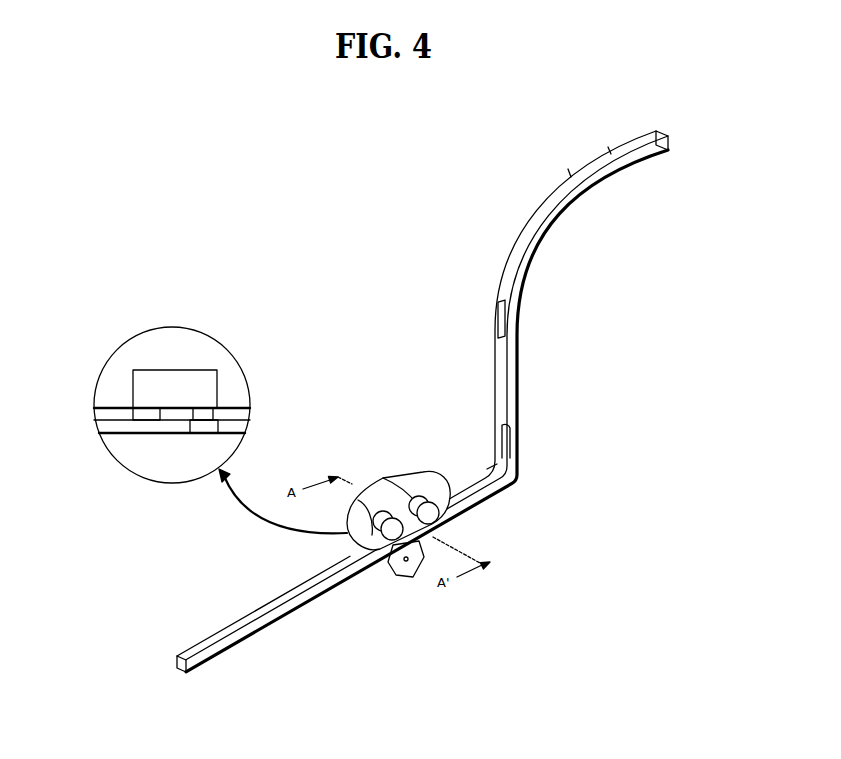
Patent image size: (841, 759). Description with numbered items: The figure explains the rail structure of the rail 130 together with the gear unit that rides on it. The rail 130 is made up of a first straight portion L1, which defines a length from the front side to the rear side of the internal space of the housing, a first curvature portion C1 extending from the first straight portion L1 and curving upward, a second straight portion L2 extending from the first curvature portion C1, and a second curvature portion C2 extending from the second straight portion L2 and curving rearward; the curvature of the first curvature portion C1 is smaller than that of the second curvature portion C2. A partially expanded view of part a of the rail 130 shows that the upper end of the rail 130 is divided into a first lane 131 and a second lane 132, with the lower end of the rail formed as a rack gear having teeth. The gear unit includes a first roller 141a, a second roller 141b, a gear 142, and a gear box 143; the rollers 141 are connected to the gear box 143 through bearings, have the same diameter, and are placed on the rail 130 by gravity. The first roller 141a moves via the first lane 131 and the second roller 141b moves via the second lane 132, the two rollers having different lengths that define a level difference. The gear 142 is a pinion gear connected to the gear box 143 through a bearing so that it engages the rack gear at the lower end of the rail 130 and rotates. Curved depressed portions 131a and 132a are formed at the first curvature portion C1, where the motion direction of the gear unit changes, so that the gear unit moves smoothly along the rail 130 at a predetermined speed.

The rail 130 is at (422, 401).
The first lane 131 is at (243, 426).
The second lane 132 is at (245, 414).
The curved depressed portion 131a is at (512, 443).
The curved depressed portion 132a is at (490, 468).
The rollers 141 is at (288, 483).
The first roller 141a is at (442, 492).
The second roller 141b is at (400, 495).
The gear 142 is at (403, 579).
The gear box 143 is at (373, 483).
The part a of the rail a is at (387, 470).
The first straight portion L1 is at (293, 638).
The second straight portion L2 is at (530, 385).
The first curvature portion C1 is at (520, 487).
The second curvature portion C2 is at (524, 191).